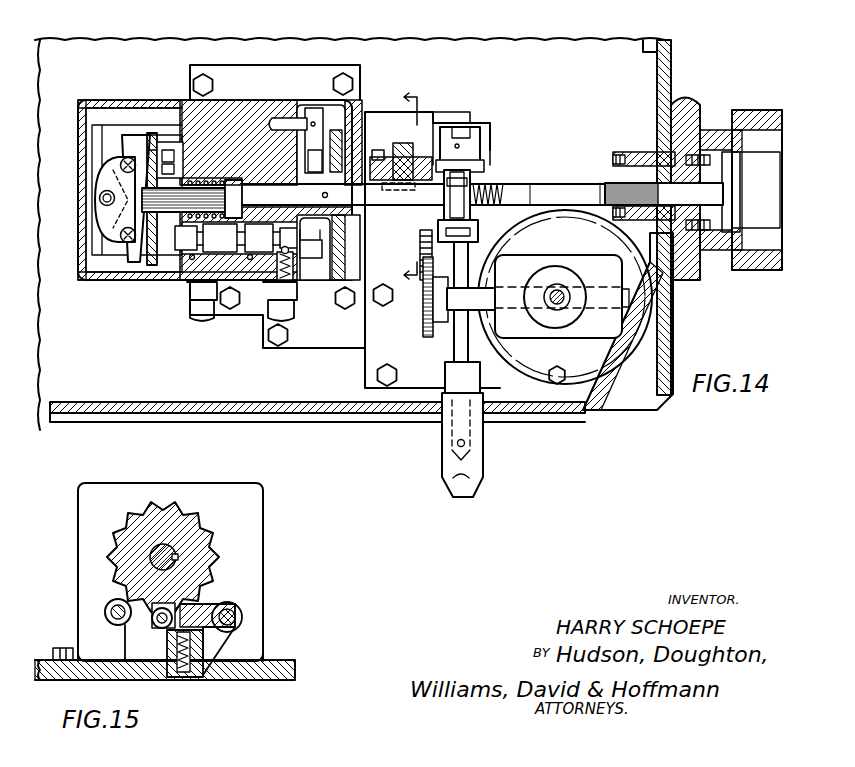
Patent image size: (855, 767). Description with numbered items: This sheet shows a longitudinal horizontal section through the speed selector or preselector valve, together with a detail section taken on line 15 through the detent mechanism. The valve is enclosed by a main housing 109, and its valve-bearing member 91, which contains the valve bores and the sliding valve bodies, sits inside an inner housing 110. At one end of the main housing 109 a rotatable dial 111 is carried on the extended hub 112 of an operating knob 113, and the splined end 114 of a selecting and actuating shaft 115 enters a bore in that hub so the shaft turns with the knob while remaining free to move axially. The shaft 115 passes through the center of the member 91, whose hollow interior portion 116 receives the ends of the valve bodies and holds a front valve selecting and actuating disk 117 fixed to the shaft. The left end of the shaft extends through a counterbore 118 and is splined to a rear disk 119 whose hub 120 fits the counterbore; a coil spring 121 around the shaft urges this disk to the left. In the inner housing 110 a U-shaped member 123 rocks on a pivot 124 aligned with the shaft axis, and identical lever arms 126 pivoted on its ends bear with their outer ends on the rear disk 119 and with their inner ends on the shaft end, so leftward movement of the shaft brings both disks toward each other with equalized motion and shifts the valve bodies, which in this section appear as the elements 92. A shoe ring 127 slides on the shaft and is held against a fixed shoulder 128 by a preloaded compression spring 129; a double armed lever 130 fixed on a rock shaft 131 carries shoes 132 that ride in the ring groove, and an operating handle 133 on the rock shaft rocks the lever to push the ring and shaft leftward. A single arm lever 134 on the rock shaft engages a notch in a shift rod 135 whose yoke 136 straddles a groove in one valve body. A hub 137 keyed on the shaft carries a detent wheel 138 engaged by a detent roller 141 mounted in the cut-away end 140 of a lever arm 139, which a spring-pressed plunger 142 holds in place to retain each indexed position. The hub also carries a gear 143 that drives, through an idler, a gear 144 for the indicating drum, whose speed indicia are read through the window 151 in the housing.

In FIG. 14, the section line 15- 15 is at (409, 179).
In FIG. 14, the member 91 is at (255, 98).
In FIG. 15, the member 91 is at (250, 532).
In FIG. 14, the plunger valve assembly 92 is at (178, 258).
In FIG. 14, the main housing 109 is at (318, 420).
In FIG. 14, the inner housing 110 is at (112, 100).
In FIG. 14, the rotatable dial 111 is at (688, 100).
In FIG. 14, the extended hub portion 112 is at (668, 186).
In FIG. 14, the operating knob 113 is at (742, 110).
In FIG. 14, the splined end 114 is at (598, 184).
In FIG. 14, the selecting and actuating shaft 115 is at (533, 183).
In FIG. 14, the hollow interior portion 116 is at (318, 288).
In FIG. 14, the front valve selecting and actuating disk 117 is at (345, 262).
In FIG. 14, the counterbore 118 is at (225, 178).
In FIG. 14, the rear valve selecting and actuating disk 119 is at (162, 145).
In FIG. 14, the hub 120 is at (190, 186).
In FIG. 14, the coil spring 121 is at (232, 184).
In FIG. 14, the U-shaped member 123 is at (100, 238).
In FIG. 14, the pivot 124 is at (98, 198).
In FIG. 14, the lever arms 126 is at (112, 135).
In FIG. 14, the shoe ring 127 is at (484, 162).
In FIG. 14, the fixed shoulder 128 is at (440, 195).
In FIG. 14, the preloaded compression spring 129 is at (486, 180).
In FIG. 14, the double armed lever 130 is at (482, 145).
In FIG. 14, the rock shaft 131 is at (484, 270).
In FIG. 14, the shoes 132 is at (478, 135).
In FIG. 14, the operating handle 133 is at (480, 454).
In FIG. 14, the single arm lever 134 is at (470, 112).
In FIG. 14, the shift rod 135 is at (432, 112).
In FIG. 14, the yoke 136 is at (325, 120).
In FIG. 14, the hub 137 is at (378, 152).
In FIG. 14, the detent wheel 138 is at (398, 148).
In FIG. 15, the detent wheel 138 is at (196, 530).
In FIG. 15, the lever arm 139 is at (208, 604).
In FIG. 15, the cut away portion 140 is at (158, 645).
In FIG. 15, the detent roller 141 is at (122, 626).
In FIG. 15, the spring-pressed plunger 142 is at (200, 652).
In FIG. 14, the gear 143 is at (438, 122).
In FIG. 14, the gear 144 is at (420, 320).
In FIG. 14, the window 151 is at (620, 370).